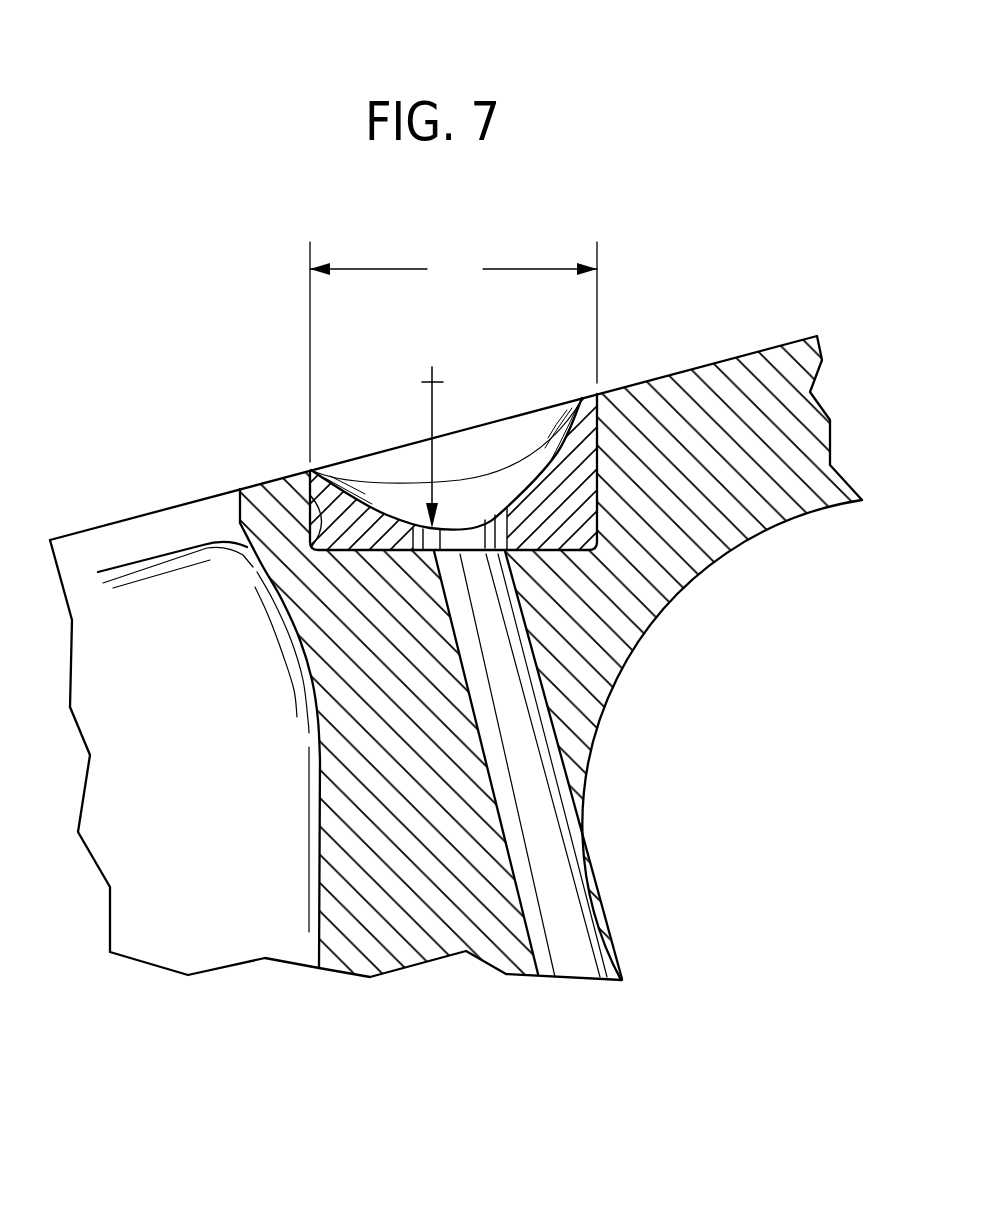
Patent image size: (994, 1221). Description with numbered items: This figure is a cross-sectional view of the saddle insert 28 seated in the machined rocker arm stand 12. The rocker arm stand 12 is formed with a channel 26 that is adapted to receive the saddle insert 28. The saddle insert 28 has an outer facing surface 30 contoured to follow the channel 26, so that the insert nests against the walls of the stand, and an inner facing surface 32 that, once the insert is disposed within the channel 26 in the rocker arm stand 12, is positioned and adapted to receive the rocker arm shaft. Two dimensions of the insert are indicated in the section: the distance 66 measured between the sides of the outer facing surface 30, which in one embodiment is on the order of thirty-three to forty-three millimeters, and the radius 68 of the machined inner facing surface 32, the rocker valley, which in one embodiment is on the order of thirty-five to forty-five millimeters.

The rocker arm stand 12 is at (591, 615).
The channel 26 is at (321, 532).
The saddle insert 28 is at (578, 463).
The outer facing surface 30 is at (600, 513).
The inner facing surface 32 is at (557, 457).
The distance 66 is at (453, 352).
The radius 68 is at (430, 407).